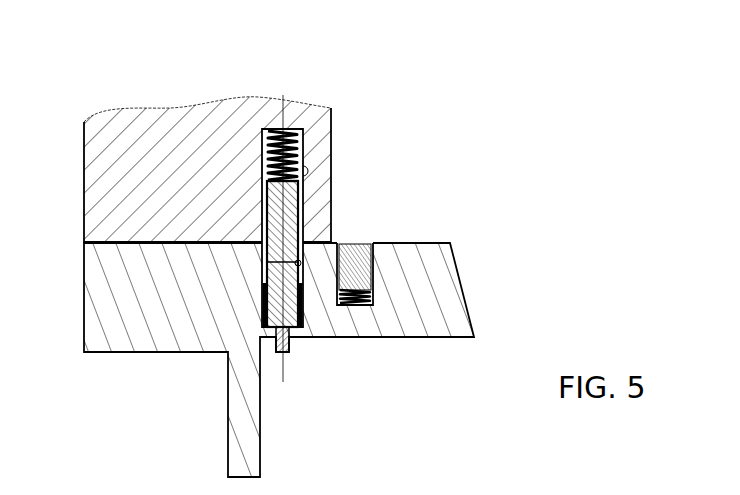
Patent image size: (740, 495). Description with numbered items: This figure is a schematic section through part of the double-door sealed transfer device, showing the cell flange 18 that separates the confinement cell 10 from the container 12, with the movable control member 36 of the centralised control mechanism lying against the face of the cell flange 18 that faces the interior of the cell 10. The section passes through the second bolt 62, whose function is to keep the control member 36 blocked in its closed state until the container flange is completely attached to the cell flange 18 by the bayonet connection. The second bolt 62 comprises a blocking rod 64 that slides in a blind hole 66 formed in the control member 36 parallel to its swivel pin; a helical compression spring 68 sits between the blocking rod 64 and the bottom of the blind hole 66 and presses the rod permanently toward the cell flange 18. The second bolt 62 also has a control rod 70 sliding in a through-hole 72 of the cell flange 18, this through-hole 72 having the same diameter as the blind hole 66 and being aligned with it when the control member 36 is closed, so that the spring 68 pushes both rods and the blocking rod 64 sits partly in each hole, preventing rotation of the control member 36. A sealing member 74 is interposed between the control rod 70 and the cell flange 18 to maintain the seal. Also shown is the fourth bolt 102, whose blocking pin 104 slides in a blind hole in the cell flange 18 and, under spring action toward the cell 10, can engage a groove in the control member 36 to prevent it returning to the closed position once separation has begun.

The movable control member 36 is at (172, 93).
The second bolt 62 is at (320, 146).
The helical compression spring 68 is at (332, 108).
The blind hole 66 is at (300, 177).
The blocking rod 64 is at (298, 226).
The sealing member 74 is at (268, 312).
The control rod 70 is at (287, 342).
The through-hole 72 is at (301, 266).
The cell flange 18 is at (100, 307).
The fourth bolt 102 is at (385, 262).
The blocking pin 104 is at (368, 288).
The confinement cell 10 is at (469, 119).
The container 12 is at (472, 413).